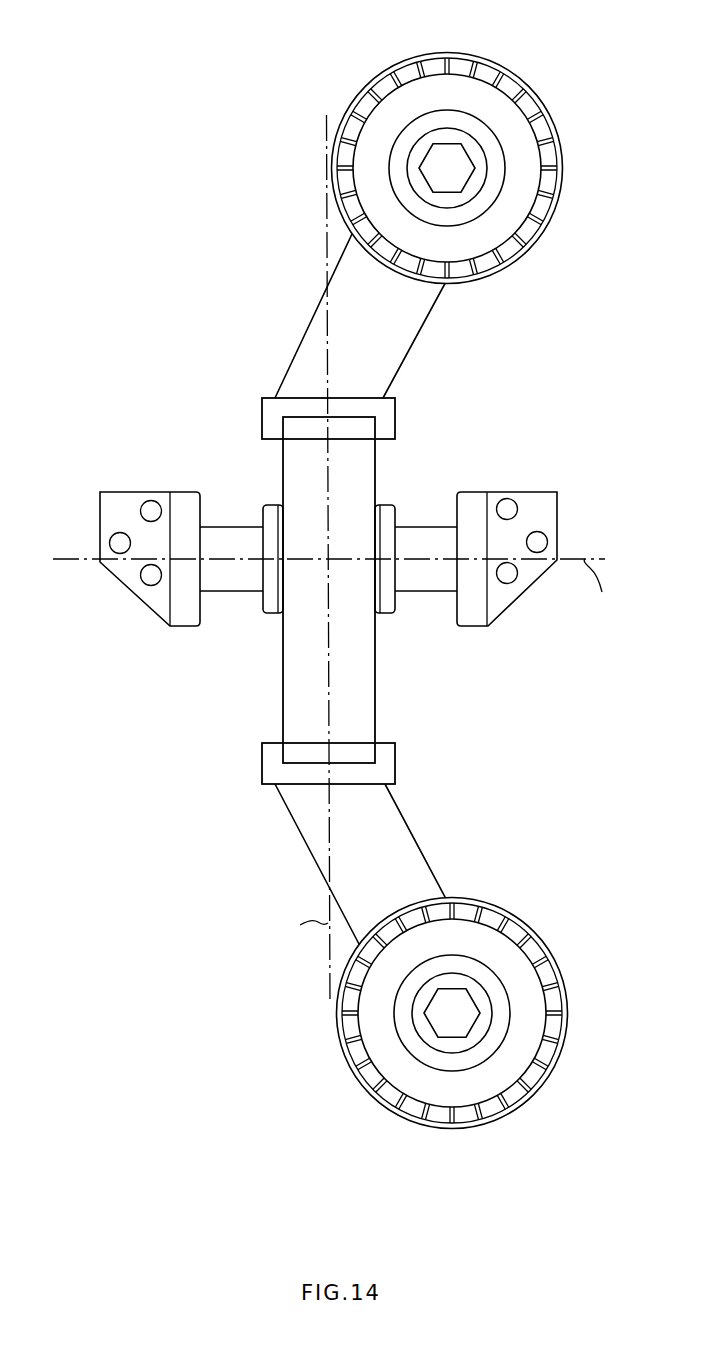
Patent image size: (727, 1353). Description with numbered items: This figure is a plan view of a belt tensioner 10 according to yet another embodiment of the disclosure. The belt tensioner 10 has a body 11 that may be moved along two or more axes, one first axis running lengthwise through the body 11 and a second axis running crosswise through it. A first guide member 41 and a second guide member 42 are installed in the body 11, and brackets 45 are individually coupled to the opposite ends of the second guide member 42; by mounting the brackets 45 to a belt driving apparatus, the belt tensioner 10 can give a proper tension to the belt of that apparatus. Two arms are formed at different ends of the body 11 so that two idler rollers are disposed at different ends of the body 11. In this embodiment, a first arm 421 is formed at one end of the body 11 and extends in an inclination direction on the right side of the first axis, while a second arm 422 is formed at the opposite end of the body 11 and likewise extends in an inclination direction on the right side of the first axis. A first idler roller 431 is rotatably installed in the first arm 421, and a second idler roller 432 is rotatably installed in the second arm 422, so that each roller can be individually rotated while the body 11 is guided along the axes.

The belt tensioner 10 is at (185, 152).
The body 11 is at (379, 719).
The first guide member 41 is at (380, 489).
The second guide member 42 is at (227, 577).
The brackets 45 is at (146, 591).
The first arm 421 is at (407, 327).
The second arm 422 is at (407, 854).
The first idler roller 431 is at (445, 52).
The second idler roller 432 is at (450, 1130).